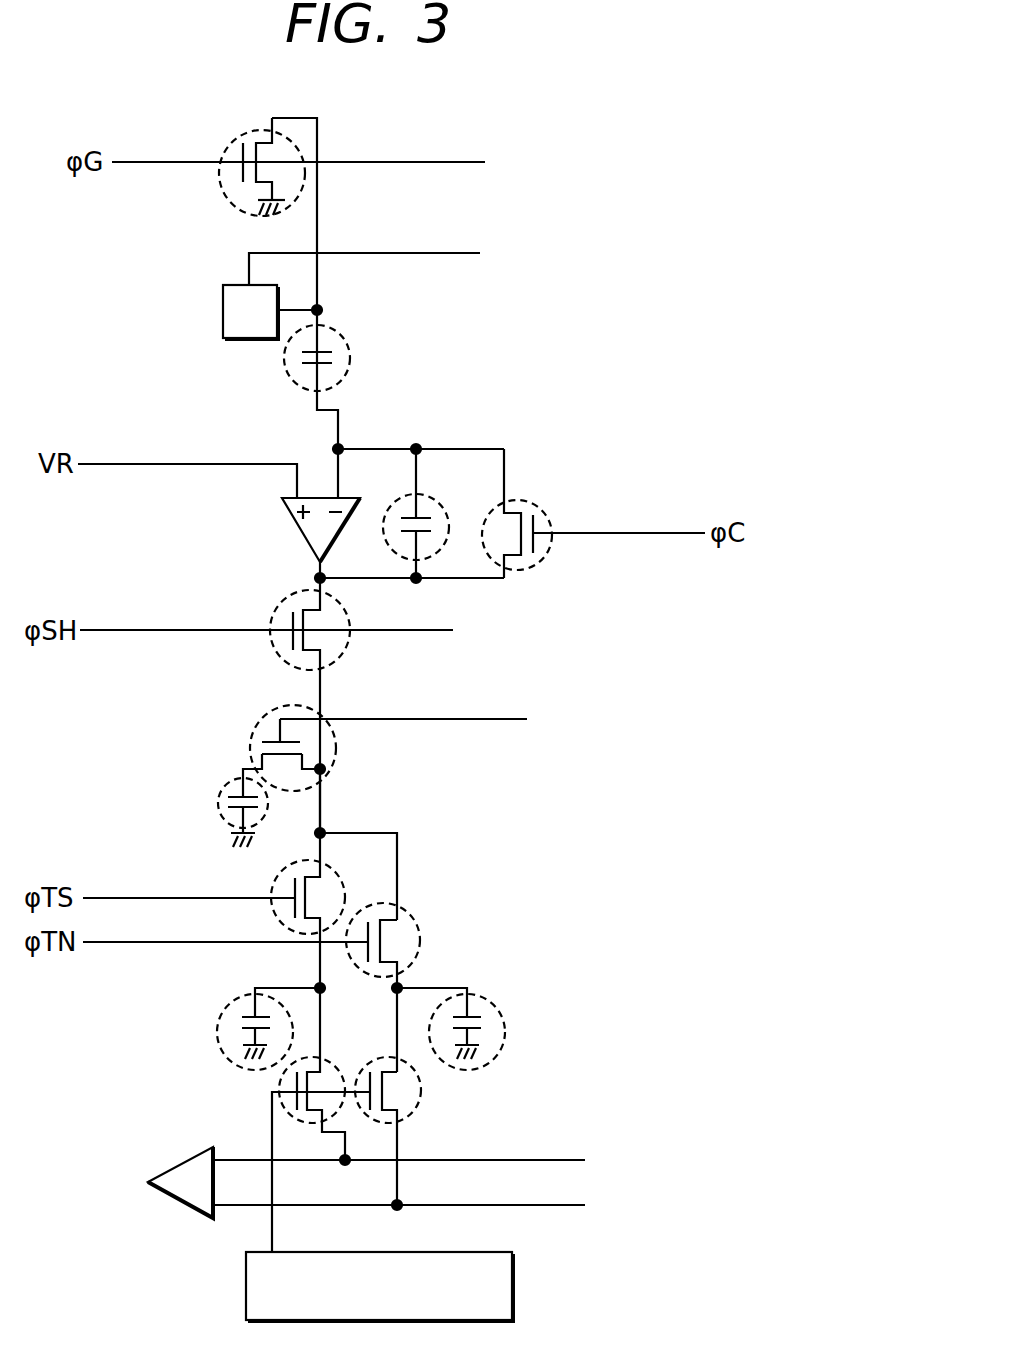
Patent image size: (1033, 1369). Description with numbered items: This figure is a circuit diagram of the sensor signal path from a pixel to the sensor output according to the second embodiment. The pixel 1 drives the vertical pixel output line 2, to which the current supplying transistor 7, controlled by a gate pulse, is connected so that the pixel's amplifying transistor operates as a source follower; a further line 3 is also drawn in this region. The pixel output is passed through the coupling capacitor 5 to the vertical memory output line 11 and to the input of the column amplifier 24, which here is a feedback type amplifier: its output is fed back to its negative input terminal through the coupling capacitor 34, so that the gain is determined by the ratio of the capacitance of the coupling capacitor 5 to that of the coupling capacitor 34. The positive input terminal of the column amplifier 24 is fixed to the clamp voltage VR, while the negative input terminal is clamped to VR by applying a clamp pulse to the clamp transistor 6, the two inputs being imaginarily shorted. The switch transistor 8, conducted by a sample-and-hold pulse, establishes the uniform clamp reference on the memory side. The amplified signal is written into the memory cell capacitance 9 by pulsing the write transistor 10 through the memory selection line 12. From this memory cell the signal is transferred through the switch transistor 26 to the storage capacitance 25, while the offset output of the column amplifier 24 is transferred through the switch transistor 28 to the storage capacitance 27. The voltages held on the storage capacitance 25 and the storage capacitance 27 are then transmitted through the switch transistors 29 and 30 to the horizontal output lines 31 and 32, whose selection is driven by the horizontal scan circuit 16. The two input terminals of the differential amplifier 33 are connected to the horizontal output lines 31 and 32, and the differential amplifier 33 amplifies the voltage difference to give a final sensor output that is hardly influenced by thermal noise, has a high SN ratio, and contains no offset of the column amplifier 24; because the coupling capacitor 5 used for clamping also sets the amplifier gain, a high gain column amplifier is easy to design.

The pixel 1 is at (223, 310).
The vertical pixel output line 2 is at (319, 215).
The line 3 is at (463, 253).
The coupling capacitor 5 is at (345, 331).
The clamp transistor 6 is at (545, 520).
The current supplying transistor 7 is at (243, 134).
The switch transistor 8 is at (281, 601).
The memory cell capacitance 9 is at (226, 787).
The write transistor 10 is at (262, 722).
The vertical memory output line 11 is at (323, 806).
The memory selection line 12 is at (500, 719).
The horizontal scan circuit 16 is at (513, 1285).
The column amplifier 24 is at (296, 527).
The storage capacitance 25 is at (226, 1010).
The switch transistor 26 is at (272, 884).
The storage capacitance 27 is at (497, 1000).
The switch transistor 28 is at (412, 908).
The switch transistor 29 is at (282, 1082).
The switch transistor 30 is at (420, 1094).
The horizontal output line 31 is at (541, 1158).
The horizontal output line 32 is at (541, 1207).
The differential amplifier 33 is at (172, 1203).
The coupling capacitor 34 is at (440, 510).